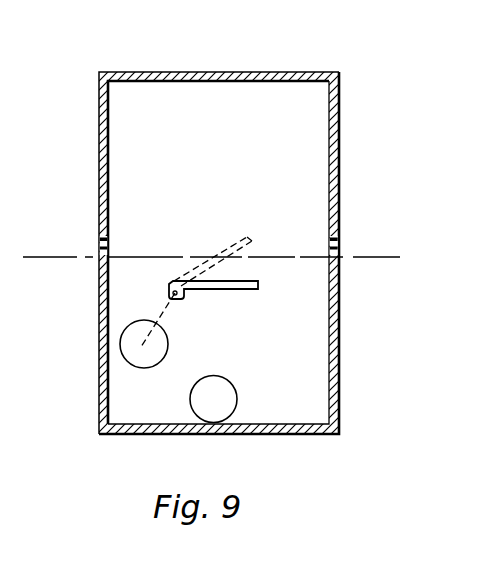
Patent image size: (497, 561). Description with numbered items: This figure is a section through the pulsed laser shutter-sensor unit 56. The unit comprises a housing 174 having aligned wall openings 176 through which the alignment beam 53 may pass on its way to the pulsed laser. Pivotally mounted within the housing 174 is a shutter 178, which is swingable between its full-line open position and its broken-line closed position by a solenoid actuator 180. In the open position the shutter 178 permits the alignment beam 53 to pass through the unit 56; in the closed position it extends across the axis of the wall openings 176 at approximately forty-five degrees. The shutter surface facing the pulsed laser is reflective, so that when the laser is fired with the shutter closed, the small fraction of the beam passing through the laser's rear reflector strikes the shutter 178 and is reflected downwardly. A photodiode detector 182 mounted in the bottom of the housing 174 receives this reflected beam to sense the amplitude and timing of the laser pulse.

The pulsed laser shutter-sensor unit 56 is at (220, 56).
The housing 174 is at (341, 98).
The aligned wall openings 176 is at (102, 269).
The alignment beam 53 is at (390, 255).
The shutter 178 is at (239, 289).
The solenoid actuator 180 is at (169, 346).
The photodiode detector 182 is at (237, 398).